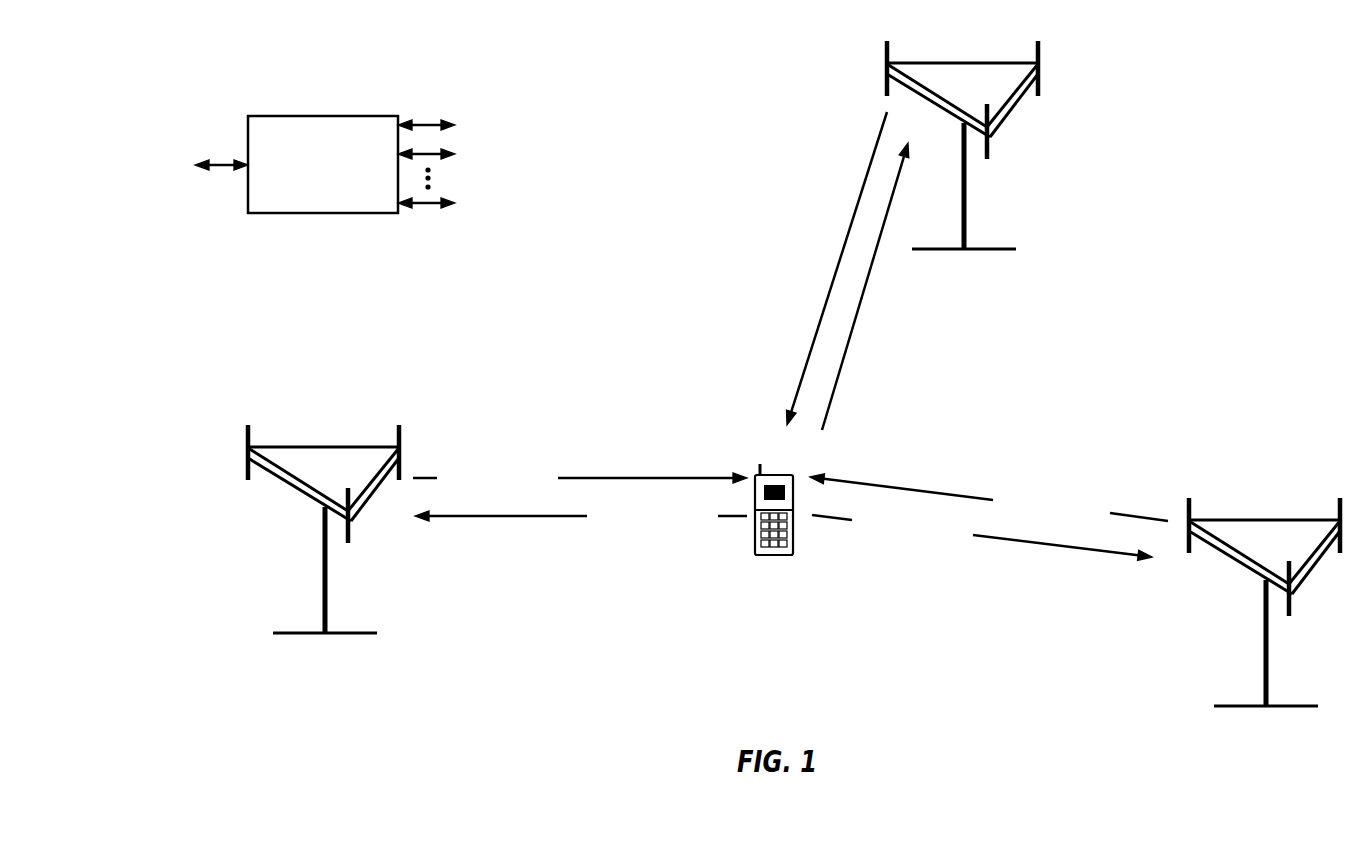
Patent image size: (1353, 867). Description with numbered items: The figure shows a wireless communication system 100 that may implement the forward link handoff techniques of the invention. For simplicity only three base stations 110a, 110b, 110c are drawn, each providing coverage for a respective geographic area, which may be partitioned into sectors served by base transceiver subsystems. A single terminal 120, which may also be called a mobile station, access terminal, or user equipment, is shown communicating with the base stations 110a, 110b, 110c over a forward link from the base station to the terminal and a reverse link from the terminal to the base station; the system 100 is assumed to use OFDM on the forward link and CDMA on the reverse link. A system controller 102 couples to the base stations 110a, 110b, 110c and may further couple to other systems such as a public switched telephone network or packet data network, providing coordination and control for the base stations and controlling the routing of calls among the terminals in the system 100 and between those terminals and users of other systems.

The wireless communication system 100 is at (1240, 49).
The system controller 102 is at (318, 116).
The base station 110a is at (314, 447).
The base station 110b is at (953, 63).
The base station 110c is at (1255, 520).
The terminal 120 is at (772, 474).